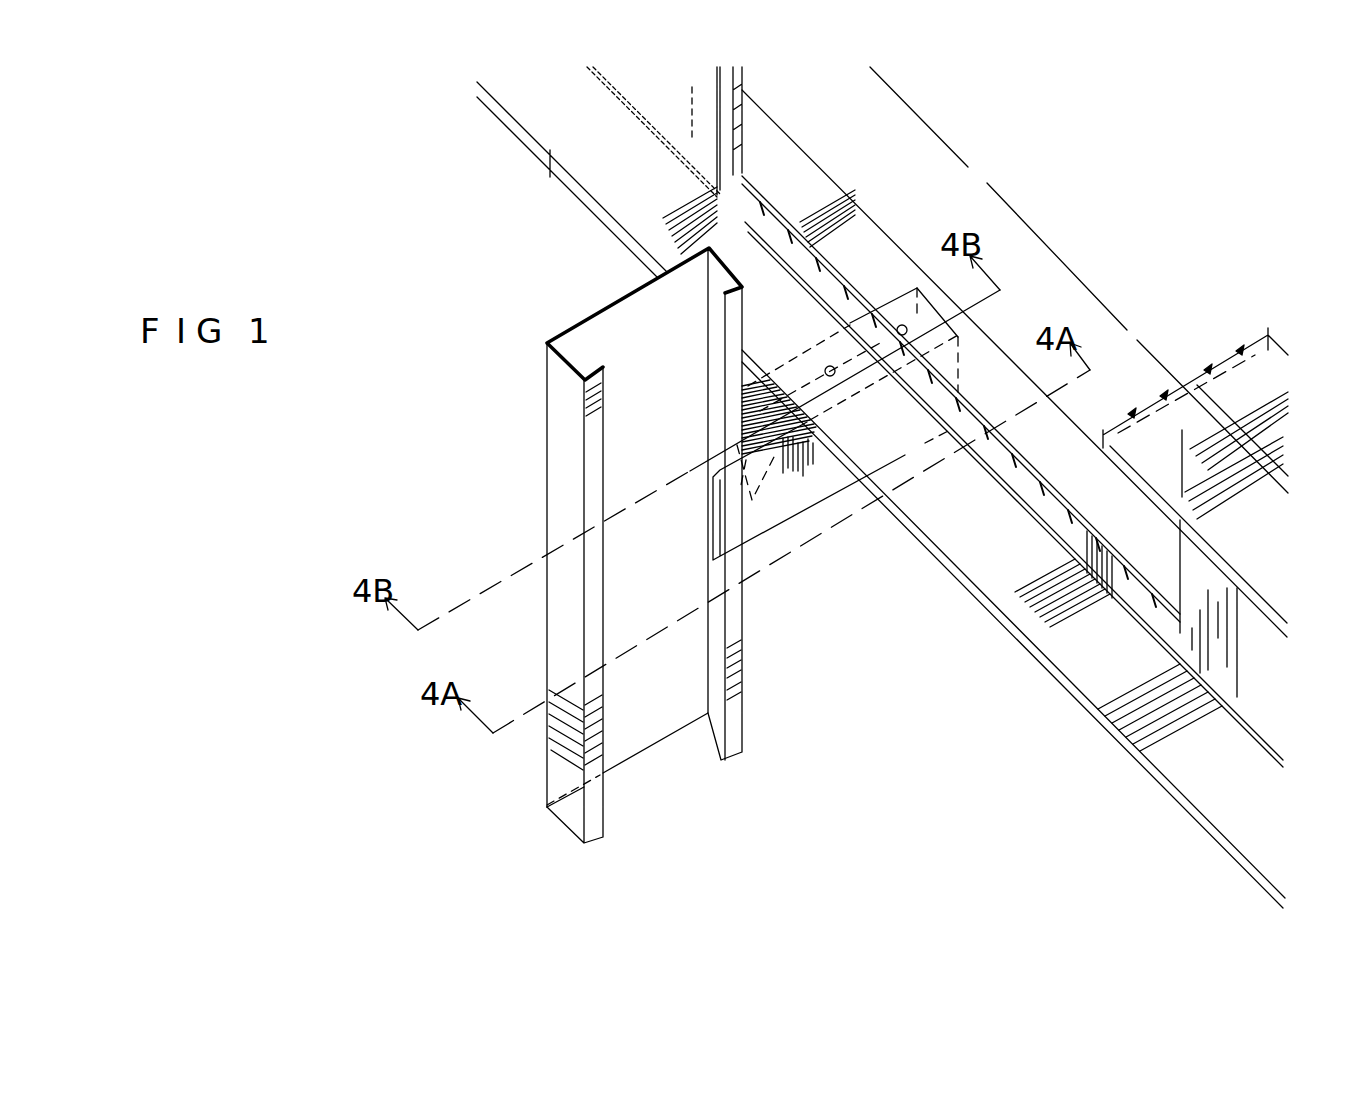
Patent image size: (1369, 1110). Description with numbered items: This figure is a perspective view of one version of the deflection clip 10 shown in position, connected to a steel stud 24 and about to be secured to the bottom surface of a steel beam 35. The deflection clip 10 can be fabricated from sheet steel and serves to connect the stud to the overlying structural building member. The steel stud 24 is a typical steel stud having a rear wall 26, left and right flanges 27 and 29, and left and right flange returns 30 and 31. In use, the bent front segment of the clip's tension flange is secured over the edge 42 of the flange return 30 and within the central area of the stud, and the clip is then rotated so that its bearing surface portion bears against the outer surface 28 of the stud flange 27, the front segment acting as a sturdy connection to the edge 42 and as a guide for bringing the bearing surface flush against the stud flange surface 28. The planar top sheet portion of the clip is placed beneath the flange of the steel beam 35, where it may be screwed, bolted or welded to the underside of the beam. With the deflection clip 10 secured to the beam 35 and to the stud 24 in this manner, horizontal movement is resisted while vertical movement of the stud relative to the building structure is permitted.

The deflection clip 10 is at (818, 515).
The steel stud 24 is at (657, 524).
The rear wall 26 is at (650, 722).
The stud flange 27 is at (707, 297).
The outer surface of the stud flange 28 is at (725, 272).
The right flange 29 is at (560, 428).
The flange return 30 is at (733, 620).
The right flange return 31 is at (593, 632).
The steel beam 35 is at (1029, 685).
The edge of the stud return flange 42 is at (725, 652).